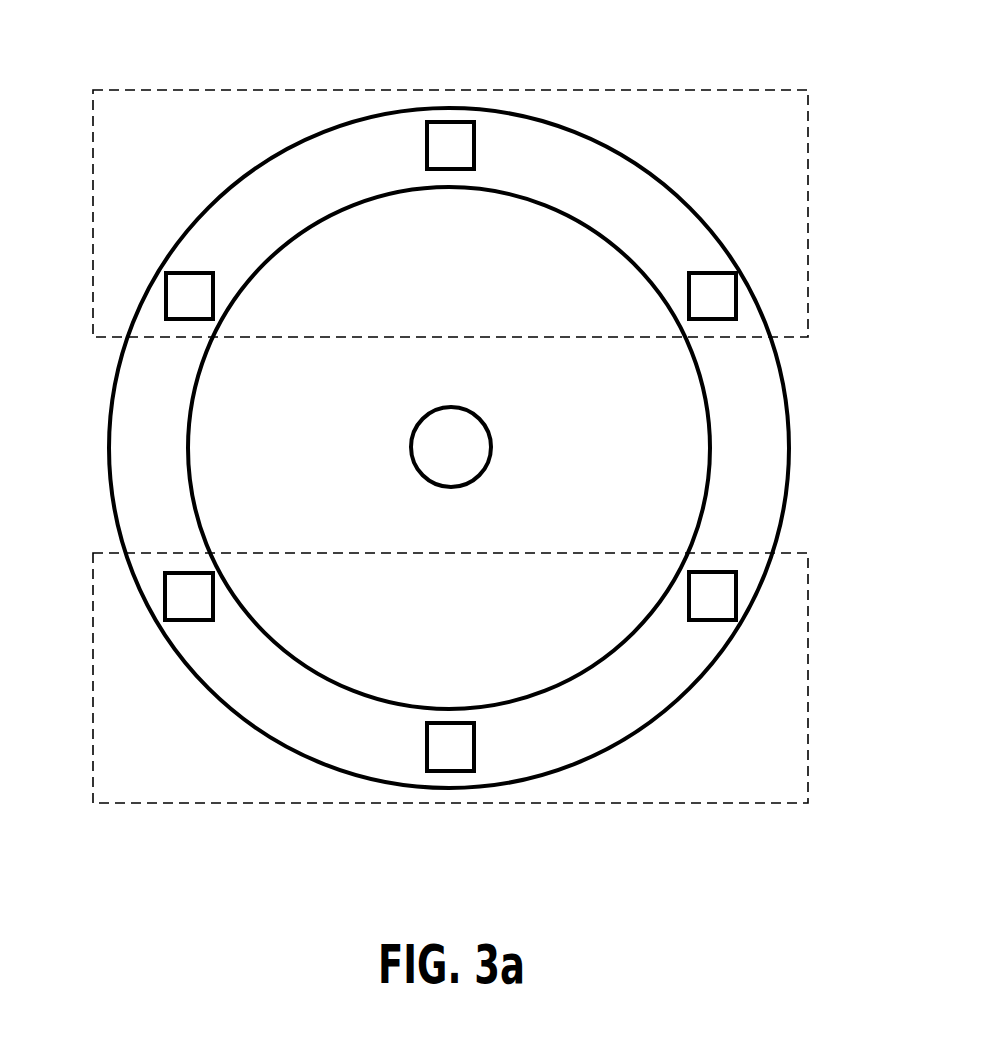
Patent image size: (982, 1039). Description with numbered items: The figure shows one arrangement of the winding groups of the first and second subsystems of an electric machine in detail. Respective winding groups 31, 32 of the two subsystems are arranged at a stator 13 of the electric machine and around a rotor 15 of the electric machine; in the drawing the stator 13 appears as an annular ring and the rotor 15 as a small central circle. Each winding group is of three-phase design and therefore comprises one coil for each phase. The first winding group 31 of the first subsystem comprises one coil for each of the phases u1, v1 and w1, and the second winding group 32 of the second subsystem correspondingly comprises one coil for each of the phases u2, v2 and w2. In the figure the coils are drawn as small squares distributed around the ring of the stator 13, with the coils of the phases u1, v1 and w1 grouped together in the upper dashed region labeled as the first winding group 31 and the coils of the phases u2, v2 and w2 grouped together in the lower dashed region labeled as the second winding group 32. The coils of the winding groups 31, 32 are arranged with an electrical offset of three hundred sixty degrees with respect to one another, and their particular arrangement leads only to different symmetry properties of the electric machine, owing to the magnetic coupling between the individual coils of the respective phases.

The stator 13 is at (792, 447).
The rotor 15 is at (492, 446).
The first winding group 31 is at (808, 178).
The second winding group 32 is at (808, 733).
The phase u1 is at (449, 122).
The phase v1 is at (736, 296).
The phase w1 is at (166, 291).
The phase u2 is at (452, 771).
The phase v2 is at (165, 596).
The phase w2 is at (736, 594).